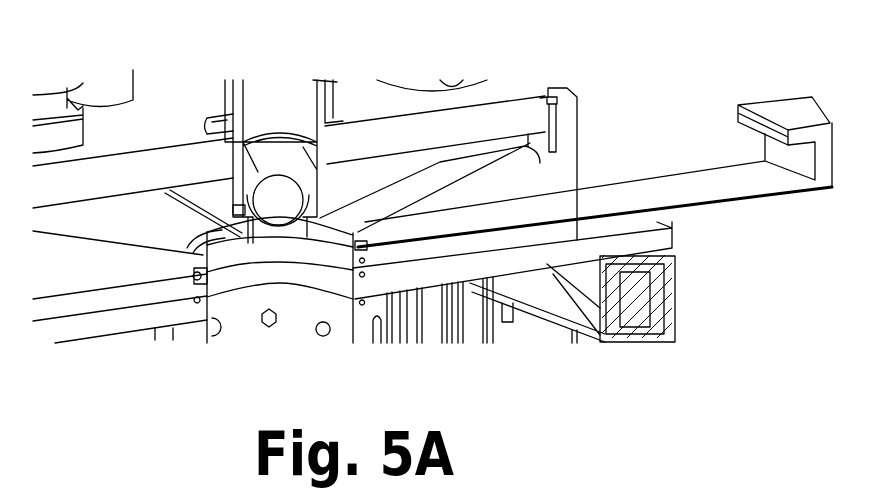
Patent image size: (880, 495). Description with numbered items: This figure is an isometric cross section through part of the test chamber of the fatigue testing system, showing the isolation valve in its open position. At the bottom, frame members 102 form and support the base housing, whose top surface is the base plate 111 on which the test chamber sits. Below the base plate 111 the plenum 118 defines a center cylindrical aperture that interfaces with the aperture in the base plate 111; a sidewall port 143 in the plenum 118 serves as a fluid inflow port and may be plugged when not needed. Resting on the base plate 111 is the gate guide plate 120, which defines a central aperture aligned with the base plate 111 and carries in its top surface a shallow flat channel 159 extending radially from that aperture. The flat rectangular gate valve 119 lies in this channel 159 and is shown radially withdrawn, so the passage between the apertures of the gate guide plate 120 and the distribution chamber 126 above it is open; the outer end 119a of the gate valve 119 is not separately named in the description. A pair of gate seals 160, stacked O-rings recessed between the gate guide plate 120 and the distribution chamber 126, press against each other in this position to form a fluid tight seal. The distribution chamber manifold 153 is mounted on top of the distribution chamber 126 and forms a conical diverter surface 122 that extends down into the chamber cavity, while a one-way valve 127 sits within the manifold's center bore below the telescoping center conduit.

The frame members 102 is at (623, 333).
The base plate 111 is at (673, 238).
The plenum 118 is at (172, 335).
The gate valve 119 is at (665, 188).
The rail end clip 119a is at (792, 105).
The gate guide plate 120 is at (538, 237).
The conical diverter surface 122 is at (186, 205).
The distribution chamber 126 is at (583, 143).
The one-way valve 127 is at (280, 222).
The sidewall port 143 is at (274, 324).
The distribution chamber manifold 153 is at (578, 110).
The shallow flat channel 159 is at (463, 242).
The gate seals 160 is at (195, 278).